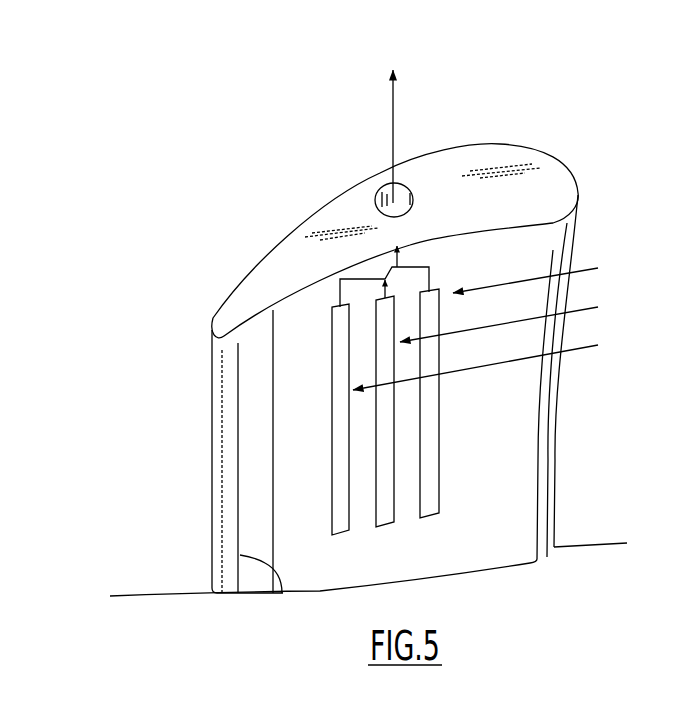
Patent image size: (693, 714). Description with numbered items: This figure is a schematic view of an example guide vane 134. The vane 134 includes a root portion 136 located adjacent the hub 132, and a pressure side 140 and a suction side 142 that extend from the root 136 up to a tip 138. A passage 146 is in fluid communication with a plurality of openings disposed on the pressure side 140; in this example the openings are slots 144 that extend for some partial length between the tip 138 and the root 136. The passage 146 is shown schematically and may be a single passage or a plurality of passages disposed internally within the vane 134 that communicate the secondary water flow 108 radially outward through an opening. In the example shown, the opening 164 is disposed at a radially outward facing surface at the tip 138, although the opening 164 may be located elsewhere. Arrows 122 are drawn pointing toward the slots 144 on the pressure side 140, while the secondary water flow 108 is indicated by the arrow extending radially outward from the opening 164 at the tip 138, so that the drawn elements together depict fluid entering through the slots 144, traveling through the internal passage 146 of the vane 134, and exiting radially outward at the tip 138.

The secondary water flow 108 is at (394, 114).
The airflow 122 is at (598, 260).
The hub 132 is at (178, 617).
The vane 134 is at (196, 222).
The root portion 136 is at (240, 555).
The tip 138 is at (245, 292).
The pressure side 140 is at (512, 435).
The suction side 142 is at (321, 206).
The slots 144 is at (384, 491).
The passage 146 is at (436, 267).
The opening 164 is at (420, 188).